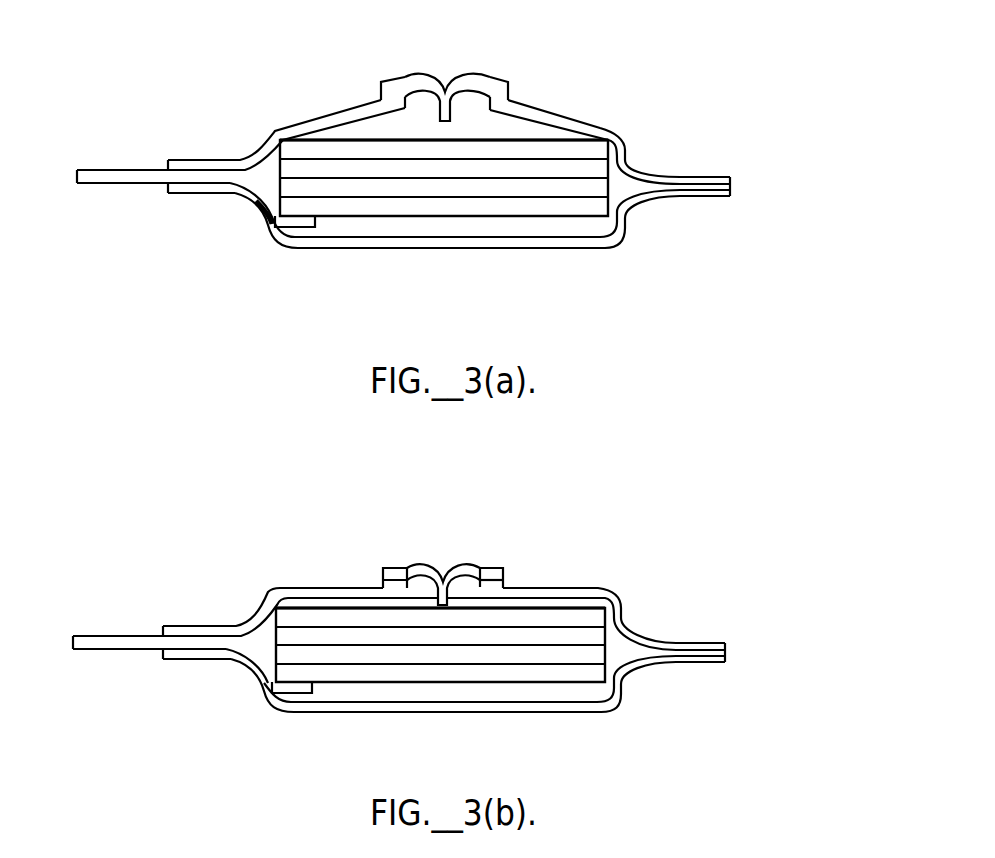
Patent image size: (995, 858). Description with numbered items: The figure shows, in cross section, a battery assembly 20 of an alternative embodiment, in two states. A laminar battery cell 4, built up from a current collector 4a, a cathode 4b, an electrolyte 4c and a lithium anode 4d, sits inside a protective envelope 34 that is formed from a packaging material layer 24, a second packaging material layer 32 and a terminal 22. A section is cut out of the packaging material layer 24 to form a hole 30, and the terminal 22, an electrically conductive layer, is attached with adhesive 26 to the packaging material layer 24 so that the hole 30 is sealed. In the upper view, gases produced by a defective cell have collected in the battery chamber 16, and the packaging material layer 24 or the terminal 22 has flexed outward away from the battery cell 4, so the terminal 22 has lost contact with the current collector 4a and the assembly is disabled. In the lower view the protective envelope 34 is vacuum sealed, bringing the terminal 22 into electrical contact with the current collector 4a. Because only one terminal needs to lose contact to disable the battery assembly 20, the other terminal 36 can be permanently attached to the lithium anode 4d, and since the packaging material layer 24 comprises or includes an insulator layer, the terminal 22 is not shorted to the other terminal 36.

In FIG. 3A, the laminar battery cell 4 is at (622, 178).
In FIG. 3B, the laminar battery cell 4 is at (618, 645).
In FIG. 3A, the current collector 4a is at (555, 155).
In FIG. 3B, the current collector 4a is at (553, 618).
In FIG. 3A, the cathode 4b is at (568, 170).
In FIG. 3B, the cathode 4b is at (573, 637).
In FIG. 3A, the electrolyte 4c is at (573, 193).
In FIG. 3B, the electrolyte 4c is at (568, 657).
In FIG. 3A, the lithium anode 4d is at (538, 210).
In FIG. 3B, the lithium anode 4d is at (543, 675).
In FIG. 3A, the battery chamber 16 is at (363, 127).
In FIG. 3A, the battery assembly 20 is at (147, 62).
In FIG. 3B, the battery assembly 20 is at (208, 545).
In FIG. 3A, the terminal 22 is at (437, 77).
In FIG. 3B, the terminal 22 is at (430, 570).
In FIG. 3A, the packaging material layer 24 is at (267, 140).
In FIG. 3B, the packaging material layer 24 is at (399, 625).
In FIG. 3A, the adhesive 26 is at (392, 81).
In FIG. 3B, the adhesive 26 is at (443, 578).
In FIG. 3A, the hole 30 is at (467, 97).
In FIG. 3A, the packaging material layer 32 is at (260, 222).
In FIG. 3A, the protective envelope 34 is at (293, 254).
In FIG. 3B, the protective envelope 34 is at (310, 720).
In FIG. 3B, the other terminal 36 is at (250, 653).